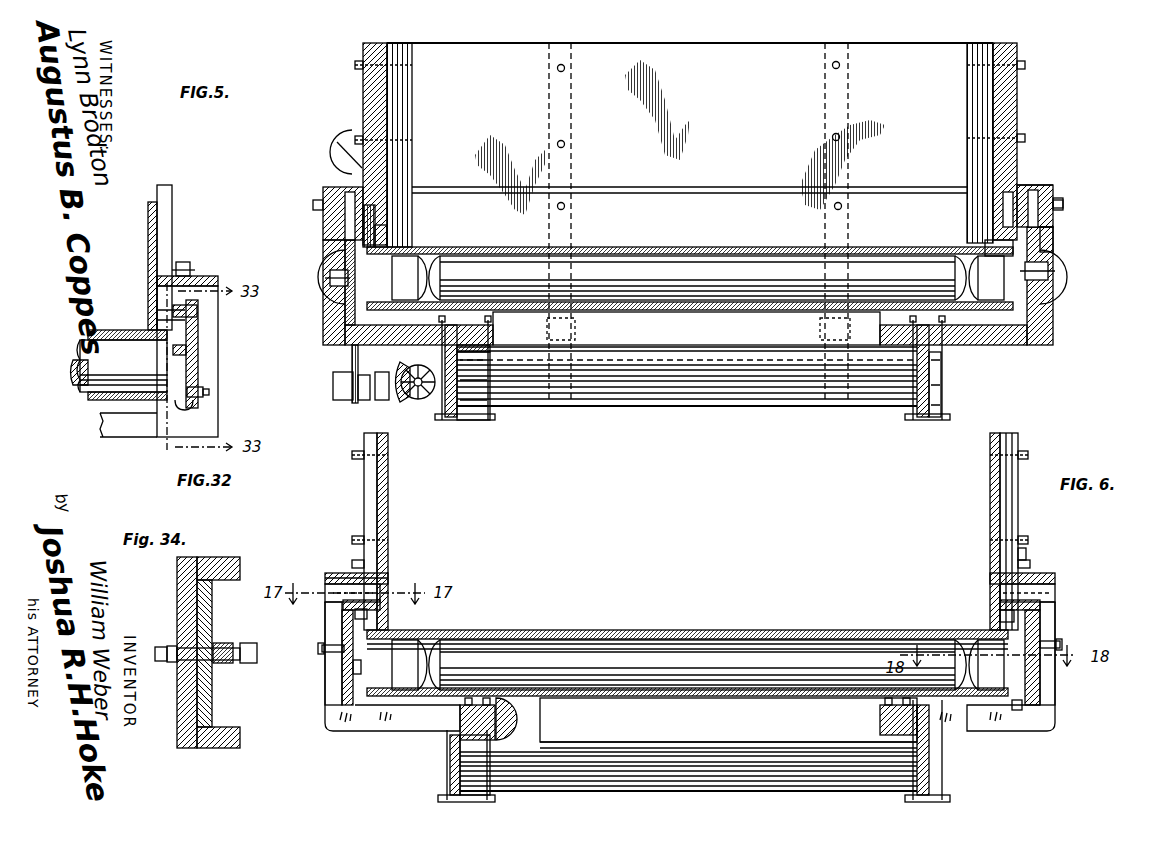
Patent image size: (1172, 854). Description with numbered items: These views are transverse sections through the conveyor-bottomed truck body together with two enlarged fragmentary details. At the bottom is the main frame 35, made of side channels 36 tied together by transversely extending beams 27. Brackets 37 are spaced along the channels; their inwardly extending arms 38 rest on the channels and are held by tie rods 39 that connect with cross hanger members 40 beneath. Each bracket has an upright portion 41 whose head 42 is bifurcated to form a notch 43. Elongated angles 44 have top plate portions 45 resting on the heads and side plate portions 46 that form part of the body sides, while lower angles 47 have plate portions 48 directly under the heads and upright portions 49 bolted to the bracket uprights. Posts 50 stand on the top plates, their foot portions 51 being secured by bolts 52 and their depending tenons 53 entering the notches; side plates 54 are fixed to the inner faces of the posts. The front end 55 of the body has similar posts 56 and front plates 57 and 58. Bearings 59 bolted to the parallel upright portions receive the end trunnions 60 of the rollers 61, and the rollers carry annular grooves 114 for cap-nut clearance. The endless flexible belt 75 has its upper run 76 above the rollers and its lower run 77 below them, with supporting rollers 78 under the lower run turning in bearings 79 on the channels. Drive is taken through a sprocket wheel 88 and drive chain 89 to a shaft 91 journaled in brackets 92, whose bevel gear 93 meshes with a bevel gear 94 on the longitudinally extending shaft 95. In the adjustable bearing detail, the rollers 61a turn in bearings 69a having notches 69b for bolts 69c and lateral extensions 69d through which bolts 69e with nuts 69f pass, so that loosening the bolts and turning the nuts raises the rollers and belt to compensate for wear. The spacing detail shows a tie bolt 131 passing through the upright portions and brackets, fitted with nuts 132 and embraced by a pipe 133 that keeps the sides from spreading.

In FIG. 5, the transversely extending beams 27 is at (655, 400).
In FIG. 6, the transversely extending beams 27 is at (641, 781).
In FIG. 5, the main frame 35 is at (687, 410).
In FIG. 5, the side channels 36 is at (457, 422).
In FIG. 6, the side channels 36 is at (450, 778).
In FIG. 5, the brackets 37 is at (323, 322).
In FIG. 6, the brackets 37 is at (325, 731).
In FIG. 32, the brackets 37 is at (158, 437).
In FIG. 34, the brackets 37 is at (178, 611).
In FIG. 5, the inwardly extending arms 38 is at (988, 338).
In FIG. 6, the inwardly extending arms 38 is at (362, 733).
In FIG. 5, the tie rods 39 is at (941, 377).
In FIG. 5, the cross hanger members 40 is at (500, 420).
In FIG. 6, the cross hanger members 40 is at (438, 800).
In FIG. 5, the upright portions 41 is at (1055, 231).
In FIG. 6, the upright portions 41 is at (325, 641).
In FIG. 5, the heads 42 is at (1053, 189).
In FIG. 6, the heads 42 is at (330, 574).
In FIG. 5, the notches 43 is at (384, 213).
In FIG. 6, the elongated angles 44 is at (389, 585).
In FIG. 5, the top plate portions 45 is at (1042, 187).
In FIG. 6, the top plate portions 45 is at (380, 575).
In FIG. 5, the side plate portions 46 is at (991, 237).
In FIG. 6, the side plate portions 46 is at (388, 609).
In FIG. 6, the angles 47 is at (1042, 605).
In FIG. 5, the plate portions 48 is at (1063, 209).
In FIG. 6, the plate portions 48 is at (342, 616).
In FIG. 32, the plate portions 48 is at (210, 278).
In FIG. 5, the upright portions 49 is at (328, 290).
In FIG. 6, the upright portions 49 is at (342, 684).
In FIG. 32, the upright portions 49 is at (200, 366).
In FIG. 34, the upright portions 49 is at (212, 705).
In FIG. 5, the posts 50 is at (363, 112).
In FIG. 6, the posts 50 is at (366, 506).
In FIG. 32, the posts 50 is at (160, 257).
In FIG. 5, the foot portions 51 is at (334, 164).
In FIG. 6, the foot portions 51 is at (350, 560).
In FIG. 5, the bolts 52 is at (323, 192).
In FIG. 6, the bolts 52 is at (1026, 560).
In FIG. 5, the depending tenons 53 is at (323, 219).
In FIG. 5, the side plates 54 is at (412, 101).
In FIG. 6, the side plates 54 is at (388, 477).
In FIG. 5, the front end 55 is at (679, 43).
In FIG. 5, the posts 56 is at (571, 113).
In FIG. 5, the front plate 57 is at (680, 137).
In FIG. 5, the front plate 58 is at (689, 207).
In FIG. 5, the bearings 59 is at (326, 256).
In FIG. 6, the bearings 59 is at (353, 667).
In FIG. 5, the end trunnions 60 is at (322, 280).
In FIG. 32, the end trunnions 60 is at (170, 359).
In FIG. 5, the rollers 61 is at (642, 270).
In FIG. 6, the rollers 61 is at (710, 660).
In FIG. 32, the rollers 61a is at (122, 366).
In FIG. 32, the bearings 69a is at (198, 346).
In FIG. 32, the notches 69b is at (188, 408).
In FIG. 32, the bolts 69c is at (210, 389).
In FIG. 32, the lateral extensions 69d is at (198, 315).
In FIG. 32, the bolts 69e is at (158, 318).
In FIG. 32, the nuts 69f is at (183, 262).
In FIG. 5, the flexible belt 75 is at (496, 247).
In FIG. 6, the flexible belt 75 is at (574, 628).
In FIG. 32, the flexible belt 75 is at (103, 330).
In FIG. 5, the upper run 76 is at (872, 252).
In FIG. 6, the upper run 76 is at (870, 634).
In FIG. 5, the lower run 77 is at (944, 340).
In FIG. 6, the lower run 77 is at (450, 708).
In FIG. 32, the lower run 77 is at (92, 400).
In FIG. 5, the supporting rollers 78 is at (609, 332).
In FIG. 6, the supporting rollers 78 is at (728, 723).
In FIG. 5, the bearings 79 is at (462, 326).
In FIG. 6, the bearings 79 is at (473, 706).
In FIG. 5, the sprocket wheel 88 is at (384, 233).
In FIG. 5, the drive chain 89 is at (350, 360).
In FIG. 5, the shaft 91 is at (333, 383).
In FIG. 5, the brackets 92 is at (363, 402).
In FIG. 5, the bevel gear 93 is at (384, 402).
In FIG. 5, the bevel gear 94 is at (420, 402).
In FIG. 5, the longitudinally extending shaft 95 is at (412, 364).
In FIG. 5, the annular grooves 114 is at (966, 256).
In FIG. 6, the annular grooves 114 is at (440, 662).
In FIG. 6, the tie bolt 131 is at (322, 648).
In FIG. 34, the tie bolt 131 is at (218, 647).
In FIG. 34, the nuts 132 is at (173, 664).
In FIG. 6, the pipe 133 is at (640, 648).
In FIG. 34, the pipe 133 is at (226, 664).